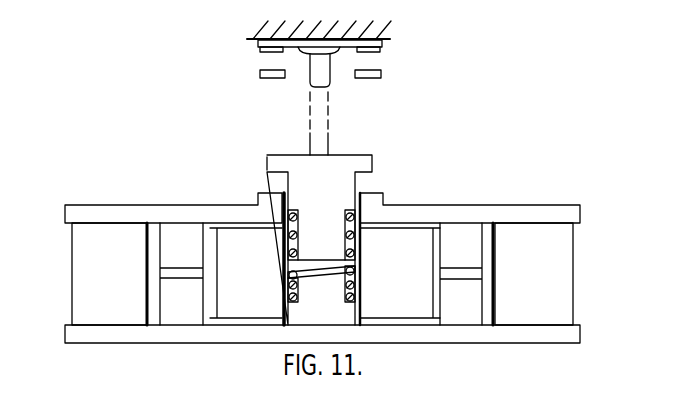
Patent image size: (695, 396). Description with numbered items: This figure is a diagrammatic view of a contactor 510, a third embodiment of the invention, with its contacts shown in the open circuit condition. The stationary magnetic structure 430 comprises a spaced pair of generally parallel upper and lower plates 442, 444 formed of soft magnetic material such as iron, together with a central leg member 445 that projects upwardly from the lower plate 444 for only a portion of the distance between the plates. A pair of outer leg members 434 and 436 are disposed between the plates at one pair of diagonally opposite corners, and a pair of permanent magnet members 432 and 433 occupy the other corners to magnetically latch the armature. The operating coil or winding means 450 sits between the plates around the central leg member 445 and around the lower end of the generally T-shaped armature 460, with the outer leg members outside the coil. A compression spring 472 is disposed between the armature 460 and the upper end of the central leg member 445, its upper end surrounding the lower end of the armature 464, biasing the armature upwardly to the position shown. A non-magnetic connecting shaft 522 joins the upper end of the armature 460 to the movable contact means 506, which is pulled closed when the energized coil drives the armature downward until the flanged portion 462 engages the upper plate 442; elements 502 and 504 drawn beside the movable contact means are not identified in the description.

The stationary magnetic structure 430 is at (622, 250).
The permanent magnet member 432 is at (72, 274).
The permanent magnet member 433 is at (573, 275).
The outer leg member 434 is at (205, 298).
The outer leg member 436 is at (445, 290).
The upper plate 442 is at (70, 206).
The lower plate 444 is at (98, 334).
The central leg member 445 is at (352, 309).
The operating coil or winding means 450 is at (238, 225).
The armature 460 is at (414, 157).
The flanged portion 462 is at (267, 160).
The lower end of armature 464 is at (310, 196).
The compression spring 472 is at (355, 243).
The left stop block 502 is at (260, 74).
The right stop block 504 is at (381, 77).
The movable contact means 506 is at (382, 43).
The contactor 510 is at (442, 111).
The non-magnetic connecting shaft 522 is at (330, 142).